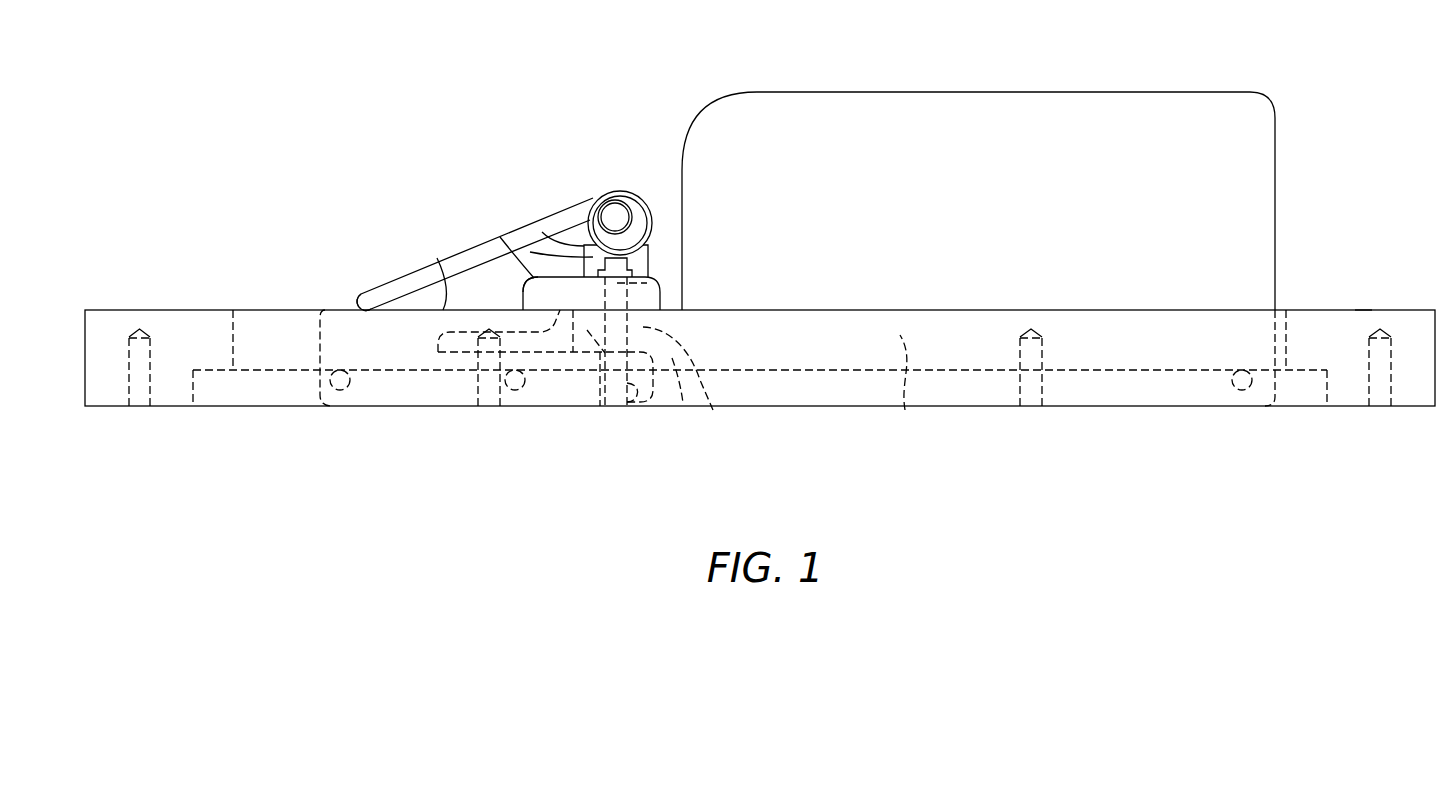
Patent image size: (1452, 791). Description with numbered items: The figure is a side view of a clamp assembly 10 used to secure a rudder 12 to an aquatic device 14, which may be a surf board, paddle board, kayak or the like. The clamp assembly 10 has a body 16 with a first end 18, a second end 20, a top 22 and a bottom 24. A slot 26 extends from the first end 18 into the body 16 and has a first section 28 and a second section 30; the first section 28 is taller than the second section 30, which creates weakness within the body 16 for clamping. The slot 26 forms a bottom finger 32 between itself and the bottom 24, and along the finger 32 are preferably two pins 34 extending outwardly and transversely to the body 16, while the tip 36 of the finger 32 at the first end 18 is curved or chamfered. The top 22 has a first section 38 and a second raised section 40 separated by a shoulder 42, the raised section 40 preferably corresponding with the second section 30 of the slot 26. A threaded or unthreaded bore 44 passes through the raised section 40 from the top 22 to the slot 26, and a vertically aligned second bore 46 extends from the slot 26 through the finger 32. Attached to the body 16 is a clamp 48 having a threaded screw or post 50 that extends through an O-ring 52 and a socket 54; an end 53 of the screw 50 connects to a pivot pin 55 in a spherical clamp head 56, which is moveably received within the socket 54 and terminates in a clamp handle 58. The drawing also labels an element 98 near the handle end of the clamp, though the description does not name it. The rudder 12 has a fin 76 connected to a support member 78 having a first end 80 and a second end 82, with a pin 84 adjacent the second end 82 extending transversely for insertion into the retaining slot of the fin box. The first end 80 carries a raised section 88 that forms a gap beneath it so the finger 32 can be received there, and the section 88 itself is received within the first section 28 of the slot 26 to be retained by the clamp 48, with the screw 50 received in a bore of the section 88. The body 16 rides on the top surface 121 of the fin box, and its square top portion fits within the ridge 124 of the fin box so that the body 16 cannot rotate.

The clamp assembly 10 is at (607, 105).
The rudder 12 is at (1263, 68).
The aquatic device 14 is at (1415, 318).
The body 16 is at (395, 375).
The first end 18 is at (655, 277).
The second end 20 is at (318, 338).
The top 22 is at (345, 310).
The bottom 24 is at (522, 385).
The slot 26 is at (475, 258).
The first section 28 is at (588, 330).
The second section 30 is at (453, 342).
The bottom finger 32 is at (550, 387).
The pins 34 is at (340, 390).
The tip 36 is at (665, 355).
The first section 38 is at (437, 258).
The second raised section 40 is at (520, 252).
The shoulder 42 is at (524, 285).
The bore 44 is at (627, 293).
The second bore 46 is at (632, 402).
The clamp 48 is at (614, 190).
The threaded screw 50 is at (655, 263).
The O-ring 52 is at (651, 228).
The end 53 is at (640, 197).
The socket 54 is at (542, 232).
The pivot pin 55 is at (612, 208).
The spherical clamp head 56 is at (651, 235).
The clamp handle 58 is at (387, 288).
The fin 76 is at (1028, 125).
The support member 78 is at (905, 410).
The first end 80 is at (600, 400).
The second end 82 is at (1272, 338).
The pin 84 is at (1250, 388).
The raised section 88 is at (713, 410).
The lever surface 98 is at (457, 250).
The top surface 121 is at (192, 310).
The ridge 124 is at (1363, 310).